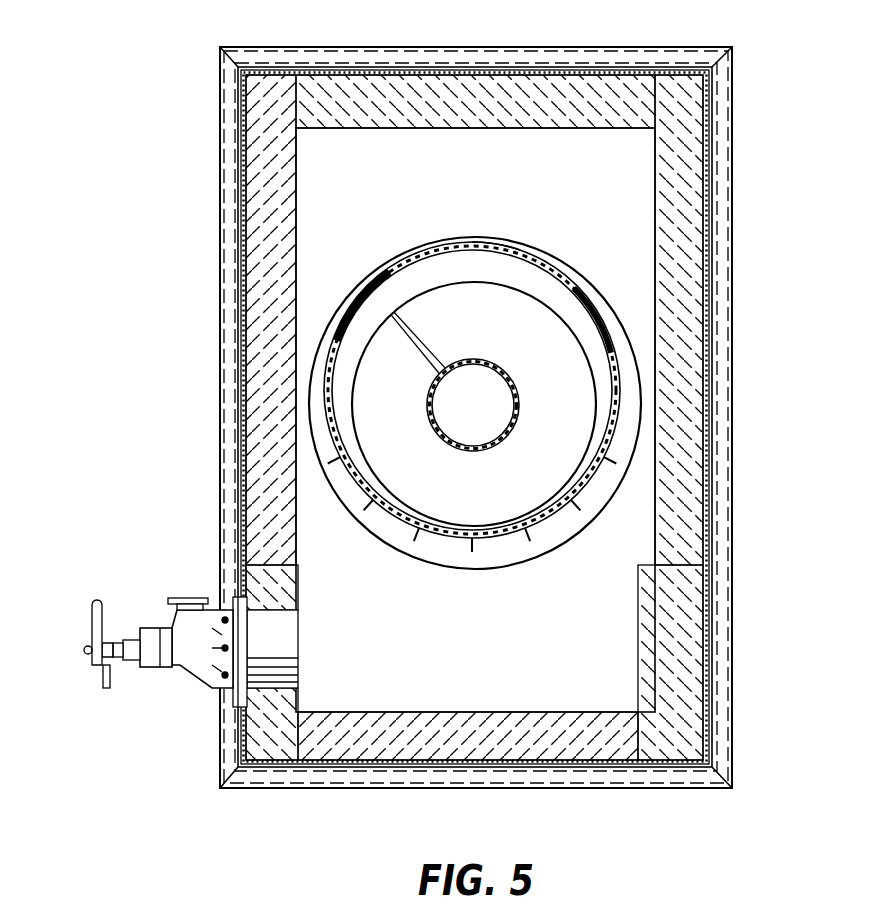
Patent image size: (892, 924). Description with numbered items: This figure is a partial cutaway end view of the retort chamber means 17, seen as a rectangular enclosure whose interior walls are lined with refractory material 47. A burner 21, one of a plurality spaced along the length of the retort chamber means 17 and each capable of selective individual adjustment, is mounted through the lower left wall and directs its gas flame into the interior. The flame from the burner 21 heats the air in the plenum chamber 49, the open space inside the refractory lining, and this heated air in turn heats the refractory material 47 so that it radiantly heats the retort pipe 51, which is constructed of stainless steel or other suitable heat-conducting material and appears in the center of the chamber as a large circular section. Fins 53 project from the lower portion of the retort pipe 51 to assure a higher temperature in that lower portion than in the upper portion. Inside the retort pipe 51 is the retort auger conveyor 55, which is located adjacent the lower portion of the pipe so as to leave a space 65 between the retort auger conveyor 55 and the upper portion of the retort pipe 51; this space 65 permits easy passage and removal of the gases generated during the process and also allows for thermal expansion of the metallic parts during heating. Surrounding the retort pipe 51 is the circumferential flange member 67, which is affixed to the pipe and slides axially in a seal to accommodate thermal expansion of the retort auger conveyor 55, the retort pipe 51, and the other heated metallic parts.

The retort chamber means 17 is at (733, 276).
The burner 21 is at (188, 643).
The refractory material 47 is at (688, 513).
The plenum chamber 49 is at (446, 163).
The retort pipe 51 is at (611, 332).
The fins 53 is at (465, 545).
The retort auger conveyor 55 is at (512, 308).
The space 65 is at (479, 265).
The circumferential flange member 67 is at (352, 292).